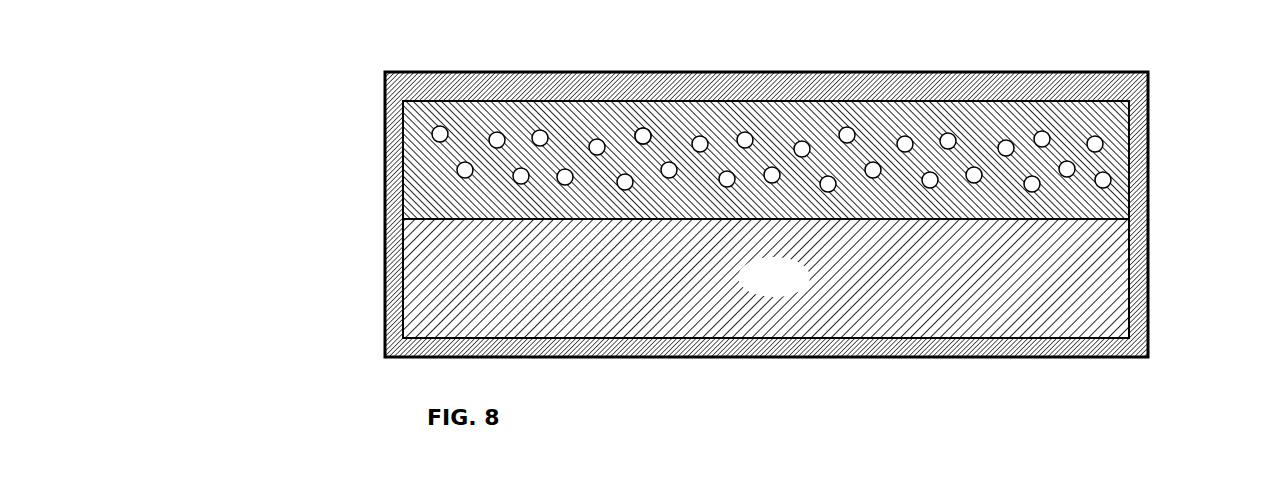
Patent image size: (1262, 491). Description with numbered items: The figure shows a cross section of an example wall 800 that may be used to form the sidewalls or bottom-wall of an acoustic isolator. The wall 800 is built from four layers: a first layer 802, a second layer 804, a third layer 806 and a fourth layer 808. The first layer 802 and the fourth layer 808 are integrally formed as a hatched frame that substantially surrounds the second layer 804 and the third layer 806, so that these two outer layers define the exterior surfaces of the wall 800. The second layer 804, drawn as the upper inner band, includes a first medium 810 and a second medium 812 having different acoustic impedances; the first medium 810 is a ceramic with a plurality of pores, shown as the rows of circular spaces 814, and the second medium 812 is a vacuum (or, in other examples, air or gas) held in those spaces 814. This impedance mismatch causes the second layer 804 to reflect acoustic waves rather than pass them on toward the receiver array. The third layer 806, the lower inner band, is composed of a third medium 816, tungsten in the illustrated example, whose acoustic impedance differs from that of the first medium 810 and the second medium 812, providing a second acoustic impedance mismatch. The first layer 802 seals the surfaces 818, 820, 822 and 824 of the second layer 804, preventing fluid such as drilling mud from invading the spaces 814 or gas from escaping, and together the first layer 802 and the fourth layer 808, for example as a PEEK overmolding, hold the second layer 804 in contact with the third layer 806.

The wall 800 is at (370, 64).
The first layer 802 is at (1053, 92).
The second layer 804 is at (1087, 124).
The third layer 806 is at (1095, 268).
The fourth layer 808 is at (1070, 355).
The first medium 810 is at (770, 127).
The second medium 812 is at (643, 135).
The spaces 814 is at (597, 147).
The third medium 816 is at (791, 286).
The surface of the second layer 818 is at (890, 101).
The surface of the second layer 820 is at (1128, 175).
The surface of the second layer 822 is at (443, 219).
The surface of the second layer 824 is at (405, 173).